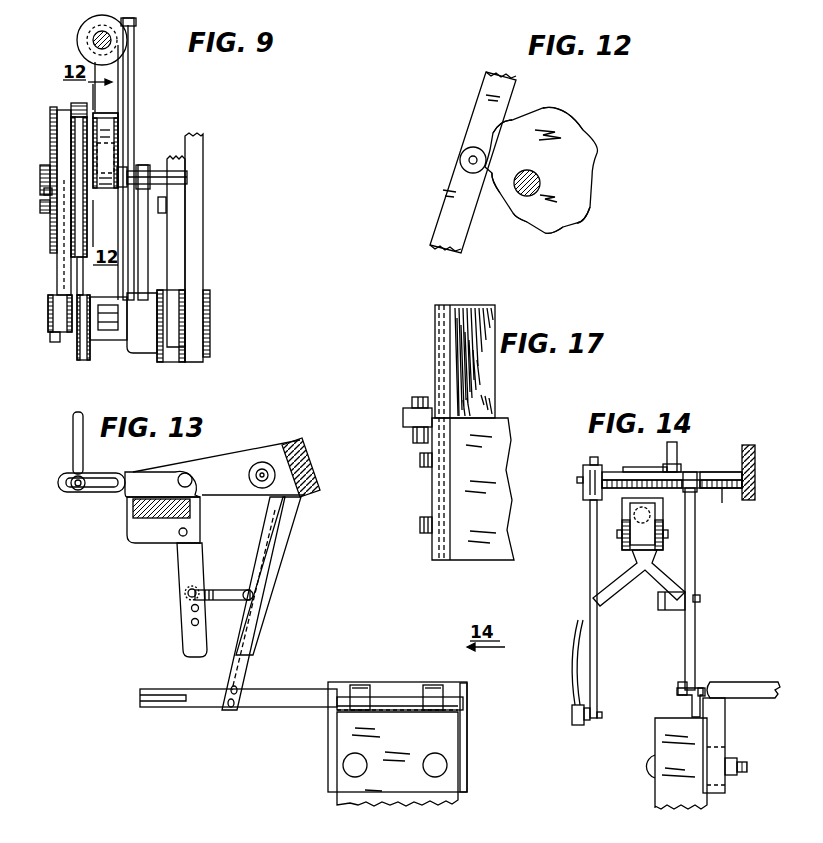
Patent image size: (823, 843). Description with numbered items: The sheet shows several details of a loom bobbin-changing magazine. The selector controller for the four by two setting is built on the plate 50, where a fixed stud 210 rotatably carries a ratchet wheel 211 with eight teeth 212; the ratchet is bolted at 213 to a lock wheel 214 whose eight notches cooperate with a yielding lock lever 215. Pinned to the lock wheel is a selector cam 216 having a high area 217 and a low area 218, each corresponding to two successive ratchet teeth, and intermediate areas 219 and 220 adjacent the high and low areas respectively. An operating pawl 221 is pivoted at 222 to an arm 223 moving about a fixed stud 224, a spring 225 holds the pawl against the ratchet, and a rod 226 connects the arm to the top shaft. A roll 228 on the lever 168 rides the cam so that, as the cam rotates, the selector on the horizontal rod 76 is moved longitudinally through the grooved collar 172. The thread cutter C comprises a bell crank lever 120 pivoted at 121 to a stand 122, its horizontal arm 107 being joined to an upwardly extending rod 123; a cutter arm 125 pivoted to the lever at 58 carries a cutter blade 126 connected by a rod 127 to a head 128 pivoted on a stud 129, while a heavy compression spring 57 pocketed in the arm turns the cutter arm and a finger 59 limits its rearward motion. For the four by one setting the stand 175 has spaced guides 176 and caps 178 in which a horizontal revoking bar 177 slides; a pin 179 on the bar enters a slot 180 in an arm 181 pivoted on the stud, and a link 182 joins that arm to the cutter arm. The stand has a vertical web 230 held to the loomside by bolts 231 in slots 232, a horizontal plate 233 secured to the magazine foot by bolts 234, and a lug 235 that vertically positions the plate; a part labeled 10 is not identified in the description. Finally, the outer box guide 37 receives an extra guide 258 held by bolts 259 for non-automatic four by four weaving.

In FIG. 13, the frame 10 is at (455, 803).
In FIG. 14, the frame 10 is at (657, 797).
In FIG. 17, the outer box guide 37 is at (437, 492).
In FIG. 9, the plate 50 is at (198, 262).
In FIG. 13, the heavy compression spring 57 is at (147, 526).
In FIG. 14, the heavy compression spring 57 is at (629, 511).
In FIG. 13, the pivot 58 is at (180, 535).
In FIG. 14, the pivot 58 is at (620, 536).
In FIG. 13, the finger 59 is at (158, 536).
In FIG. 9, the horizontal rod 76 is at (95, 37).
In FIG. 13, the horizontal arm 107 is at (60, 483).
In FIG. 13, the bell crank lever 120 is at (150, 476).
In FIG. 14, the bell crank lever 120 is at (653, 468).
In FIG. 13, the pivot 121 is at (187, 477).
In FIG. 14, the pivot 121 is at (727, 471).
In FIG. 13, the stand 122 is at (251, 456).
In FIG. 14, the stand 122 is at (753, 457).
In FIG. 13, the upwardly extending rod 123 is at (74, 450).
In FIG. 14, the upwardly extending rod 123 is at (677, 466).
In FIG. 13, the cutter arm 125 is at (185, 572).
In FIG. 14, the cutter arm 125 is at (613, 581).
In FIG. 14, the cutter blade 126 is at (575, 718).
In FIG. 13, the rod 127 is at (262, 538).
In FIG. 14, the rod 127 is at (590, 565).
In FIG. 13, the head 128 is at (312, 464).
In FIG. 14, the head 128 is at (585, 467).
In FIG. 13, the stud 129 is at (253, 492).
In FIG. 14, the stud 129 is at (719, 507).
In FIG. 9, the lever 168 is at (133, 72).
In FIG. 12, the lever 168 is at (486, 92).
In FIG. 9, the grooved collar 172 is at (83, 45).
In FIG. 13, the stand 175 is at (330, 758).
In FIG. 14, the stand 175 is at (725, 737).
In FIG. 13, the spaced guides 176 is at (370, 698).
In FIG. 13, the horizontal revoking bar 177 is at (308, 697).
In FIG. 14, the horizontal revoking bar 177 is at (690, 708).
In FIG. 13, the caps 178 is at (428, 697).
In FIG. 14, the caps 178 is at (703, 692).
In FIG. 13, the pin 179 is at (229, 706).
In FIG. 14, the pin 179 is at (680, 697).
In FIG. 13, the slot 180 is at (231, 712).
In FIG. 13, the arm 181 is at (243, 653).
In FIG. 14, the arm 181 is at (695, 631).
In FIG. 13, the link 182 is at (225, 590).
In FIG. 14, the link 182 is at (684, 593).
In FIG. 9, the fixed stud 210 is at (40, 180).
In FIG. 12, the fixed stud 210 is at (529, 174).
In FIG. 9, the ratchet wheel 211 is at (58, 116).
In FIG. 9, the teeth 212 is at (50, 192).
In FIG. 9, the bolt 213 is at (43, 213).
In FIG. 9, the lock wheel 214 is at (78, 104).
In FIG. 9, the yielding lock lever 215 is at (83, 270).
In FIG. 9, the selector cam 216 is at (110, 128).
In FIG. 12, the selector cam 216 is at (586, 179).
In FIG. 12, the high area 217 is at (578, 126).
In FIG. 12, the low area 218 is at (510, 212).
In FIG. 12, the intermediate area 219 is at (498, 128).
In FIG. 12, the intermediate area 220 is at (493, 176).
In FIG. 9, the operating pawl 221 is at (60, 267).
In FIG. 9, the pivot 222 is at (48, 315).
In FIG. 9, the arm 223 is at (78, 340).
In FIG. 9, the fixed stud 224 is at (107, 332).
In FIG. 9, the spring 225 is at (52, 334).
In FIG. 9, the rod 226 is at (145, 245).
In FIG. 9, the roll 228 is at (113, 155).
In FIG. 12, the roll 228 is at (460, 159).
In FIG. 13, the vertical web 230 is at (463, 784).
In FIG. 14, the vertical web 230 is at (727, 793).
In FIG. 14, the bolts 231 is at (646, 766).
In FIG. 14, the slots 232 is at (728, 749).
In FIG. 14, the horizontal plate 233 is at (762, 683).
In FIG. 14, the bolts 234 is at (729, 840).
In FIG. 13, the lug 235 is at (450, 707).
In FIG. 14, the lug 235 is at (688, 715).
In FIG. 17, the extra guide 258 is at (437, 362).
In FIG. 17, the bolts 259 is at (410, 402).
In FIG. 14, the thread cutter C is at (572, 706).